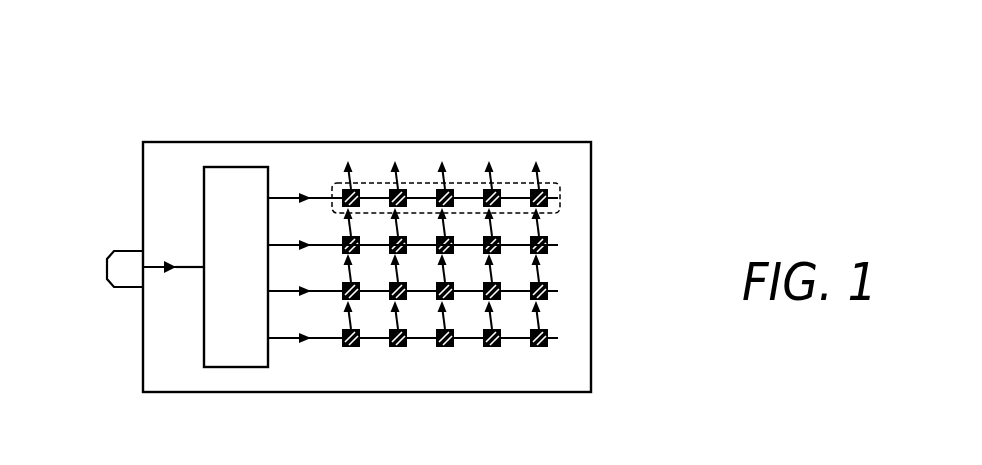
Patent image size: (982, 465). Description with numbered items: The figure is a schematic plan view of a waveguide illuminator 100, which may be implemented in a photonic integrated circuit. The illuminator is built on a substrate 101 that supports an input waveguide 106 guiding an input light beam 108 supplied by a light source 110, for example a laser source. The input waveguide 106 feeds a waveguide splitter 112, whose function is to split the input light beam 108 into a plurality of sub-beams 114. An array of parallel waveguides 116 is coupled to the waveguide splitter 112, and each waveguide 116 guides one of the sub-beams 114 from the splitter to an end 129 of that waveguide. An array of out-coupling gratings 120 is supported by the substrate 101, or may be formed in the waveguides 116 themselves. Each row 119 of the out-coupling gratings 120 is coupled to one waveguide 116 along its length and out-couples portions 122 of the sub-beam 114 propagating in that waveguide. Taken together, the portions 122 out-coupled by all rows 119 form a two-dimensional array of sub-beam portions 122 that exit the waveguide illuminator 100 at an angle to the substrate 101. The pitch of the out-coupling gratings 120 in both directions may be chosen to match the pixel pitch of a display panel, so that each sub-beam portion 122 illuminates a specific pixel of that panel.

The waveguide illuminator 100 is at (221, 84).
The substrate 101 is at (157, 186).
The input waveguide 106 is at (190, 270).
The input light beam 108 is at (153, 272).
The light source 110 is at (115, 270).
The waveguide splitter 112 is at (217, 280).
The sub-beams 114 is at (282, 339).
The waveguides 116 is at (323, 196).
The row 119 is at (561, 188).
The out-coupling gratings 120 is at (398, 348).
The portions 122 is at (443, 172).
The end 129 is at (570, 245).